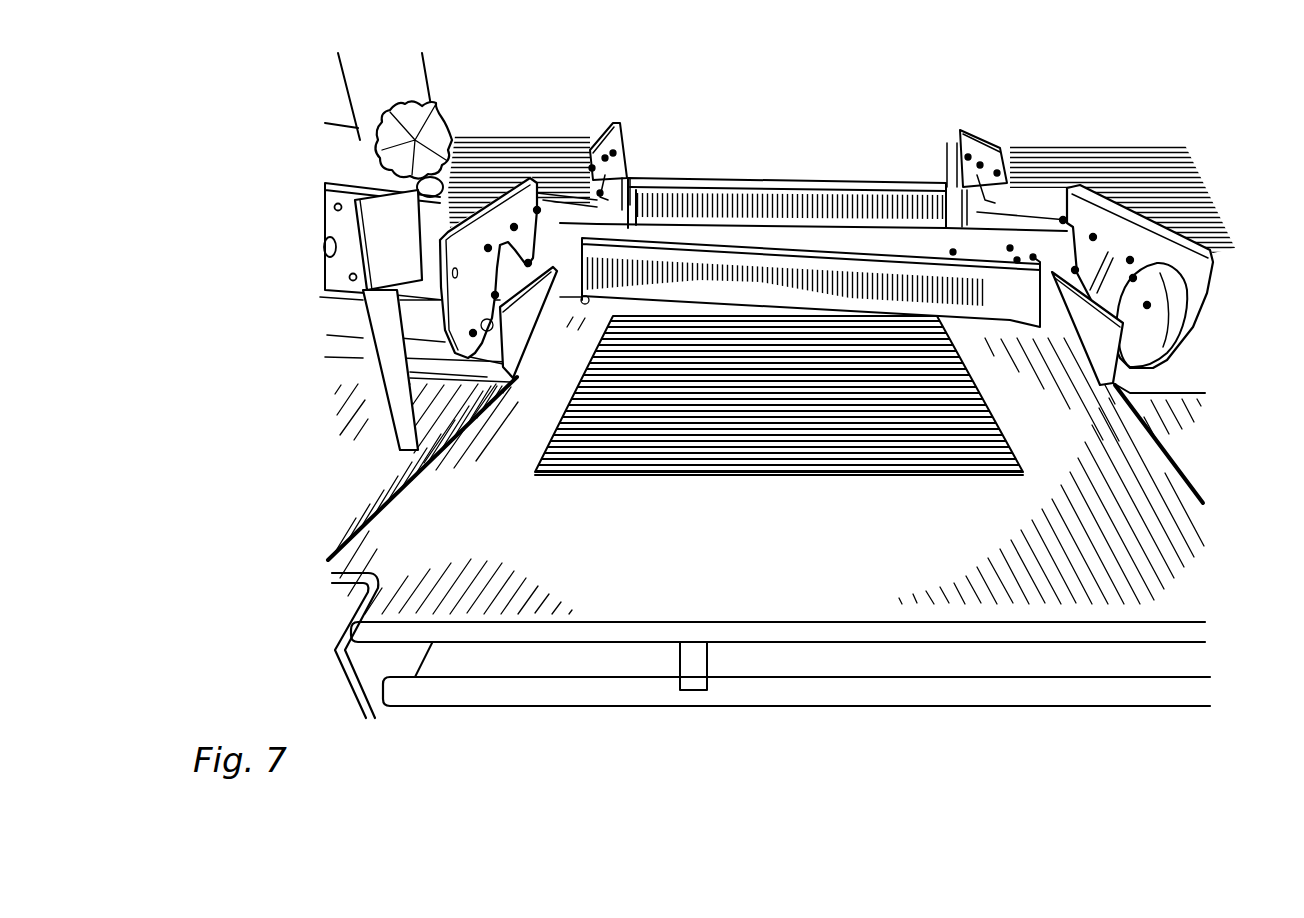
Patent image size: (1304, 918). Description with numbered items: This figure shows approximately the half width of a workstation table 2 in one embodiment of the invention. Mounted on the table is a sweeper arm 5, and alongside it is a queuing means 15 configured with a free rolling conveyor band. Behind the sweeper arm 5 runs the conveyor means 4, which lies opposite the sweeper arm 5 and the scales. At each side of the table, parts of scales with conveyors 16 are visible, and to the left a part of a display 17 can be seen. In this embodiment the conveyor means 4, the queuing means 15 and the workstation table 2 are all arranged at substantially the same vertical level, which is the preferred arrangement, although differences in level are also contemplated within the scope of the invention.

The workstation table 2 is at (613, 575).
The conveyor means 4 is at (733, 235).
The sweeper arm 5 is at (770, 200).
The queuing means 15 is at (857, 407).
The scales with conveyors 16 is at (453, 208).
The display 17 is at (338, 88).